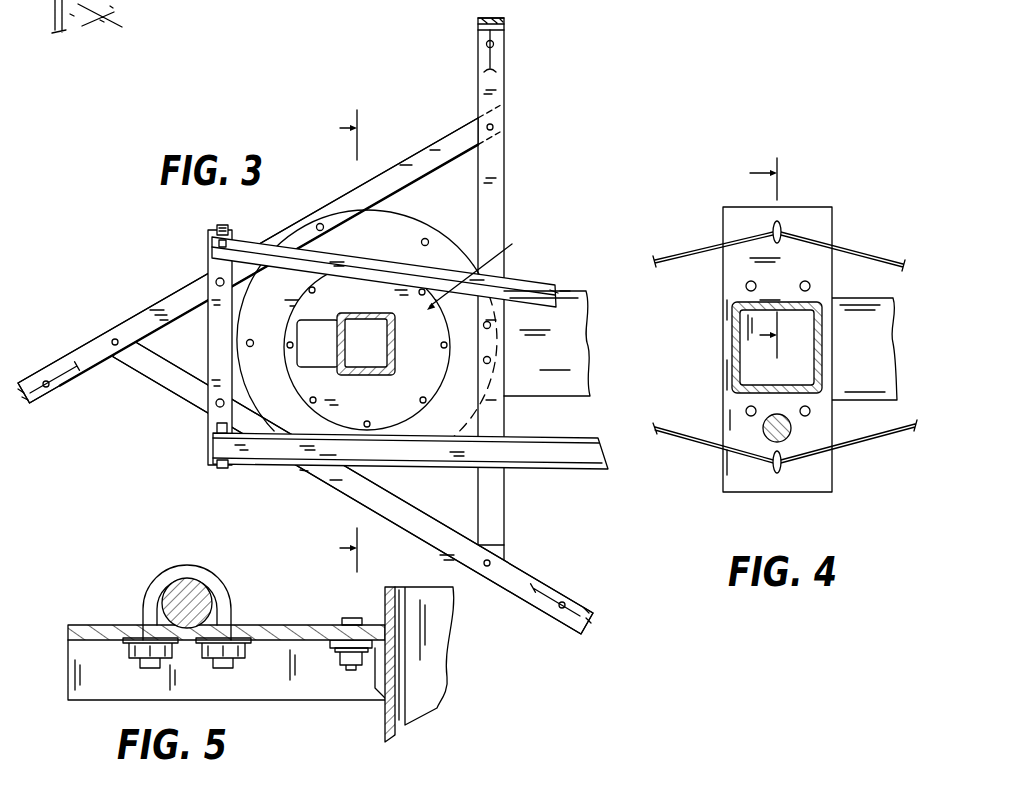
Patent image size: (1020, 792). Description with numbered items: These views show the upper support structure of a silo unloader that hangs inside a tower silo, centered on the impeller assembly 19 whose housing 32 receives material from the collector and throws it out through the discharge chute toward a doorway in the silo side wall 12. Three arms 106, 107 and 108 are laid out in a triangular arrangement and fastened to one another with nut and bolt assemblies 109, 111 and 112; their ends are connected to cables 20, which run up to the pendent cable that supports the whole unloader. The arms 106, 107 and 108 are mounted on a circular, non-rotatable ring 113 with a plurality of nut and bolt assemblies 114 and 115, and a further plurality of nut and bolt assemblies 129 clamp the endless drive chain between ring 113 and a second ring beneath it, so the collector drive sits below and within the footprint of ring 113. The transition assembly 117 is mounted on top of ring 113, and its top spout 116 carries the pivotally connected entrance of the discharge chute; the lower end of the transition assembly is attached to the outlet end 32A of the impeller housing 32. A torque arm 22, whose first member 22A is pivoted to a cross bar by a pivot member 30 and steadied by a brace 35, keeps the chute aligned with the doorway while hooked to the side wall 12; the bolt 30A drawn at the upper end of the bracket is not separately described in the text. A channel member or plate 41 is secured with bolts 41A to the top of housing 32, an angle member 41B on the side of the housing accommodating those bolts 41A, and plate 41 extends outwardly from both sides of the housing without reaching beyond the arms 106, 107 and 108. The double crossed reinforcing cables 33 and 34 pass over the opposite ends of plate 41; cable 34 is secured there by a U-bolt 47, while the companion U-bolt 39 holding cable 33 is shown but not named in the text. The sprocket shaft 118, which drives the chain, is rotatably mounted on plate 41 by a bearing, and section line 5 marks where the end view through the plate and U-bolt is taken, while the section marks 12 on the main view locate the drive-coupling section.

In FIG. 3, the impeller assembly 19 is at (566, 290).
In FIG. 3, the cables 20 is at (62, 364).
In FIG. 3, the torque arm 22 is at (552, 472).
In FIG. 3, the first member 22A is at (337, 450).
In FIG. 3, the pivot member 30 is at (222, 471).
In FIG. 3, the bolt 30A is at (215, 228).
In FIG. 3, the housing 32 is at (572, 365).
In FIG. 4, the housing 32 is at (875, 330).
In FIG. 4, the outlet end 32A is at (733, 363).
In FIG. 5, the outlet end 32A is at (398, 713).
In FIG. 4, the cable 33 is at (690, 443).
In FIG. 4, the cable 34 is at (703, 248).
In FIG. 5, the cable 34 is at (193, 592).
In FIG. 3, the brace 35 is at (390, 270).
In FIG. 4, the lower U-bolt 39 is at (780, 473).
In FIG. 4, the channel member or plate 41 is at (737, 475).
In FIG. 5, the channel member or plate 41 is at (293, 632).
In FIG. 4, the bolts 41A is at (799, 286).
In FIG. 5, the bolts 41A is at (350, 620).
In FIG. 5, the angle member 41B is at (380, 675).
In FIG. 4, the U-bolt 47 is at (783, 230).
In FIG. 5, the U-bolt 47 is at (153, 602).
In FIG. 3, the arm 106 is at (497, 180).
In FIG. 3, the arm 107 is at (205, 290).
In FIG. 3, the arm 108 is at (205, 405).
In FIG. 3, the nut and bolt assembly 109 is at (497, 124).
In FIG. 3, the nut and bolt assembly 111 is at (116, 333).
In FIG. 3, the nut and bolt assembly 112 is at (488, 570).
In FIG. 3, the ring 113 is at (262, 372).
In FIG. 3, the nut and bolt assemblies 114 is at (483, 359).
In FIG. 3, the nut and bolt assemblies 115 is at (316, 224).
In FIG. 3, the spout 116 is at (367, 377).
In FIG. 3, the transition assembly 117 is at (488, 273).
In FIG. 4, the sprocket shaft 118 is at (792, 430).
In FIG. 3, the nut and bolt assembly 129 is at (428, 240).
In FIG. 3, the side wall 12 is at (340, 130).
In FIG. 4, the section line 5 is at (748, 174).